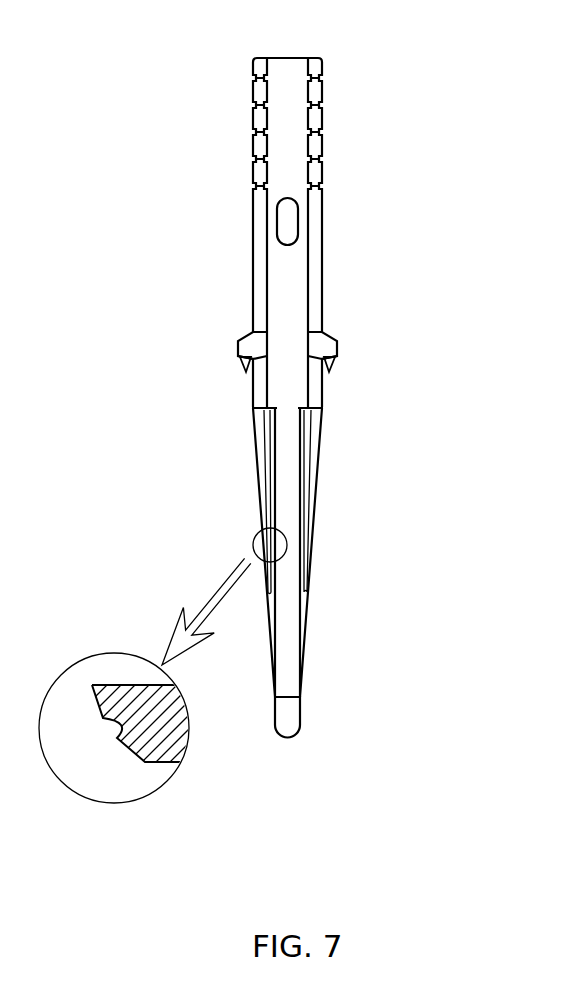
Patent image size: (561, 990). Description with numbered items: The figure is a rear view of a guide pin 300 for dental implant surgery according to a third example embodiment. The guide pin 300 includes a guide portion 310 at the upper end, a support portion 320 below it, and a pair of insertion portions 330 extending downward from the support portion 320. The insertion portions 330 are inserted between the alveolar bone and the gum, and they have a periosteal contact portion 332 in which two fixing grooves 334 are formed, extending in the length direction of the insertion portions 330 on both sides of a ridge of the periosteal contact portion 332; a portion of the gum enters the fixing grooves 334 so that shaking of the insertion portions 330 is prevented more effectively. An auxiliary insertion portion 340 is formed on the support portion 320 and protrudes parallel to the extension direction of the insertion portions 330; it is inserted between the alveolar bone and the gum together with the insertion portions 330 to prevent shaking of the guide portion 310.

The guide pin 300 is at (407, 97).
The guide portion 310 is at (331, 61).
The support portion 320 is at (238, 343).
The insertion portions 330 is at (308, 615).
The periosteal contact portion 332 is at (295, 732).
The fixing grooves 334 is at (267, 508).
The auxiliary insertion portion 340 is at (244, 370).